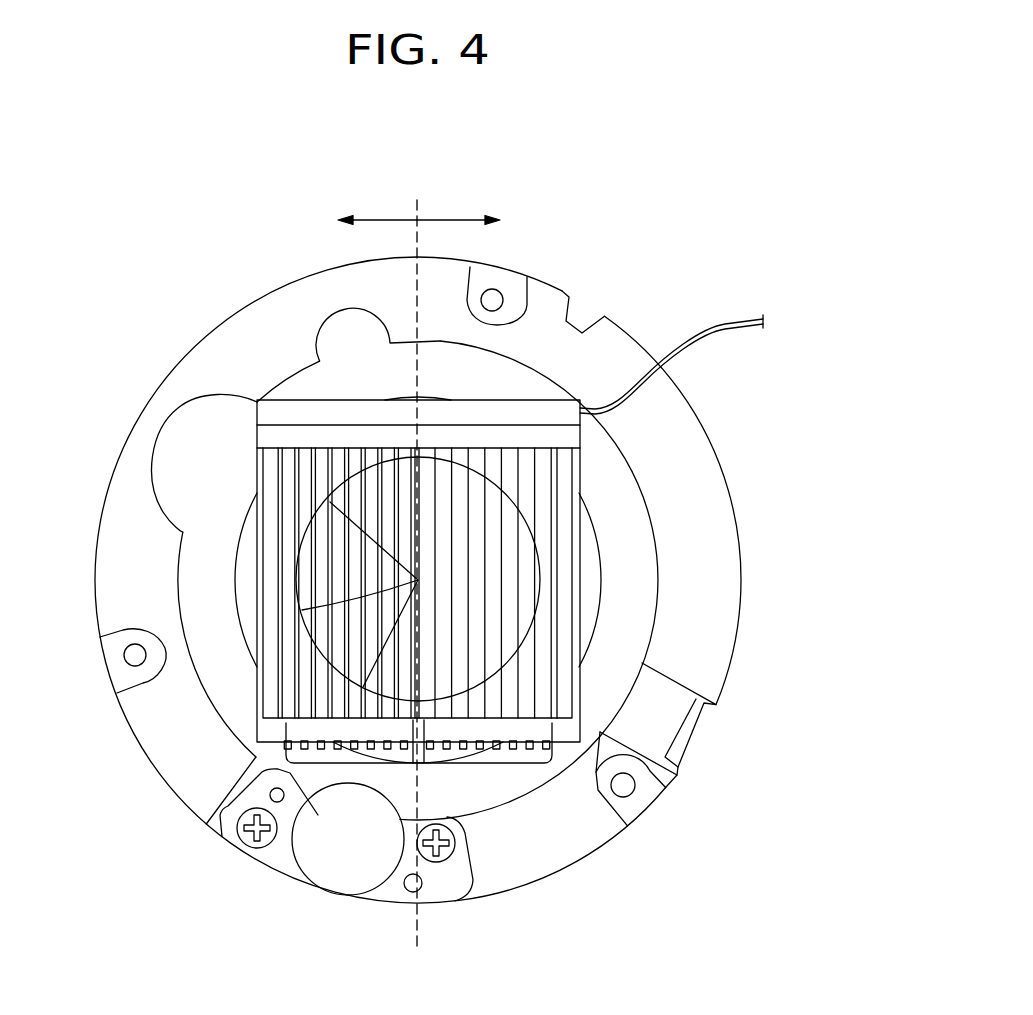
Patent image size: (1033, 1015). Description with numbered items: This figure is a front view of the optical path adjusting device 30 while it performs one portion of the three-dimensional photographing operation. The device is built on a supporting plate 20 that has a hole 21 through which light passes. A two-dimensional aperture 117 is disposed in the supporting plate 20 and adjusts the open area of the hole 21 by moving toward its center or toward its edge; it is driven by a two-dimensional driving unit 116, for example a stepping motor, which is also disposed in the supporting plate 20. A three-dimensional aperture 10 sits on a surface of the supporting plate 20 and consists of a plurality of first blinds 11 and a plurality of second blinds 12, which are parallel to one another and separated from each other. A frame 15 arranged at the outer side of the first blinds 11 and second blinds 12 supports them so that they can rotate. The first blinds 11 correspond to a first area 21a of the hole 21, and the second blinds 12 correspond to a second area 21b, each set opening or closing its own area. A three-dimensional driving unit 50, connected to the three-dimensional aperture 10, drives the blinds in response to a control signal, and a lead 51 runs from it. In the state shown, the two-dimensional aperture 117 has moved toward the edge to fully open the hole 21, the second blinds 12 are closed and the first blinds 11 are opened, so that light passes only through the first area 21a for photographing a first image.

The optical path adjusting device 30 is at (150, 204).
The 3D aperture 10 is at (594, 472).
The first blinds 11 is at (349, 764).
The second blinds 12 is at (487, 766).
The frame 15 is at (267, 484).
The supporting plate 20 is at (743, 543).
The hole 21 is at (327, 668).
The first area 21a is at (352, 222).
The second area 21b is at (483, 222).
The 3D driving unit 50 is at (284, 407).
The power wire 51 is at (716, 325).
The 2D driving unit 116 is at (336, 873).
The 2D aperture 117 is at (318, 576).